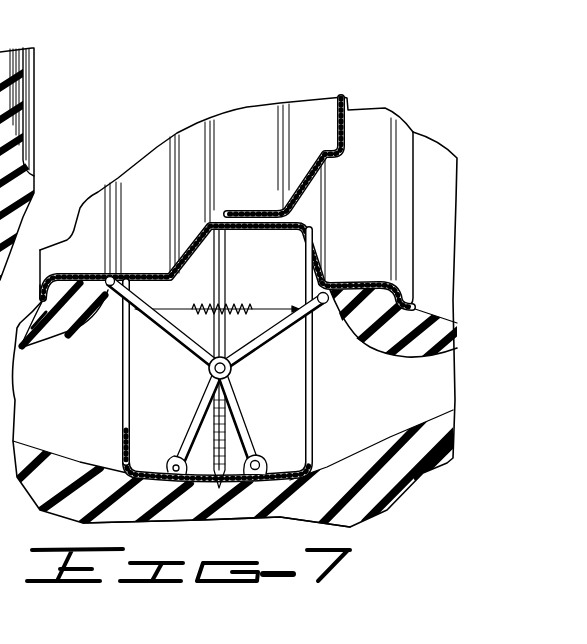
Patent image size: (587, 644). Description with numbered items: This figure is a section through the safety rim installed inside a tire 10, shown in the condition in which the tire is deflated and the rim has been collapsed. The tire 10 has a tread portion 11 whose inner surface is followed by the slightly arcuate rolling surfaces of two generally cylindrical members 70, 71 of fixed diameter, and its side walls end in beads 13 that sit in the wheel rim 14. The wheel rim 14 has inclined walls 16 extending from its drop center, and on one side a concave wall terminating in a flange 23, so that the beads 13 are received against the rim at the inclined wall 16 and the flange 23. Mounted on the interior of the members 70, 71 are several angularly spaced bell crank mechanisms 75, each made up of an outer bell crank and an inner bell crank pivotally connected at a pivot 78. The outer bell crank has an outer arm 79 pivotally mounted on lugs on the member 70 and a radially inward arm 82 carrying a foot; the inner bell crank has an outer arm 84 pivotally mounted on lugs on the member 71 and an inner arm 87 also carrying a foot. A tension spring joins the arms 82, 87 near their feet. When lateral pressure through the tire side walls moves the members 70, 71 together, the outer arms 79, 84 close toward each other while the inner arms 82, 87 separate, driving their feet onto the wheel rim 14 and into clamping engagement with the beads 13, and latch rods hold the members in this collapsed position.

The inflatable tire 10 is at (410, 483).
The tread portion 11 is at (246, 520).
The beads 13 is at (68, 332).
The wheel rim 14 is at (396, 109).
The inclined walls 16 is at (401, 281).
The flange 23 is at (38, 287).
The cylindrical member 70 is at (296, 410).
The cylindrical member 71 is at (131, 420).
The bell crank mechanism 75 is at (242, 369).
The pivotal connection 78 is at (212, 377).
The outer arm 79 is at (245, 426).
The radially inward arm 82 is at (282, 325).
The outer arm 84 is at (188, 434).
The inner arm 87 is at (178, 348).